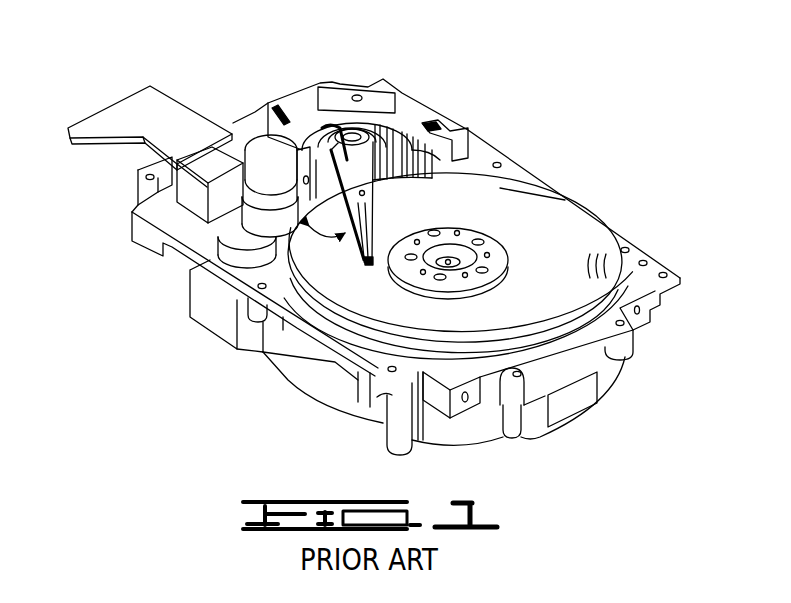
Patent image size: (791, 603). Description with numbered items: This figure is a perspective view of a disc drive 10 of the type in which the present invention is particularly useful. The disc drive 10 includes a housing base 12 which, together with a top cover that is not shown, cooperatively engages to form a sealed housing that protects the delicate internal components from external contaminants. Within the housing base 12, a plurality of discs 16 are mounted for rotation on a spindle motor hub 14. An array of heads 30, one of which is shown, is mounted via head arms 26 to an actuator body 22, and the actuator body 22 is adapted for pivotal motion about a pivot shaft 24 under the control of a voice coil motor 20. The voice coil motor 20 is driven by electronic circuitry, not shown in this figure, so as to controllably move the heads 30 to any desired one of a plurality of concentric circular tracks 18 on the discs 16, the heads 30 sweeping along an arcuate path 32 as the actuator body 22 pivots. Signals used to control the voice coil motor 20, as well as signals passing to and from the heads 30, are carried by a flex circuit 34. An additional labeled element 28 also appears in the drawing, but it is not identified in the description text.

The disc drive 10 is at (128, 80).
The housing base 12 is at (298, 390).
The spindle motor hub 14 is at (463, 257).
The discs 16 is at (520, 202).
The concentric circular tracks 18 is at (605, 253).
The voice coil motor 20 is at (404, 78).
The actuator body 22 is at (345, 130).
The pivot shaft 24 is at (381, 123).
The head arms 26 is at (370, 180).
The suspension load beam 28 is at (375, 245).
The heads 30 is at (372, 266).
The arcuate path 32 is at (311, 233).
The flex circuit 34 is at (265, 145).